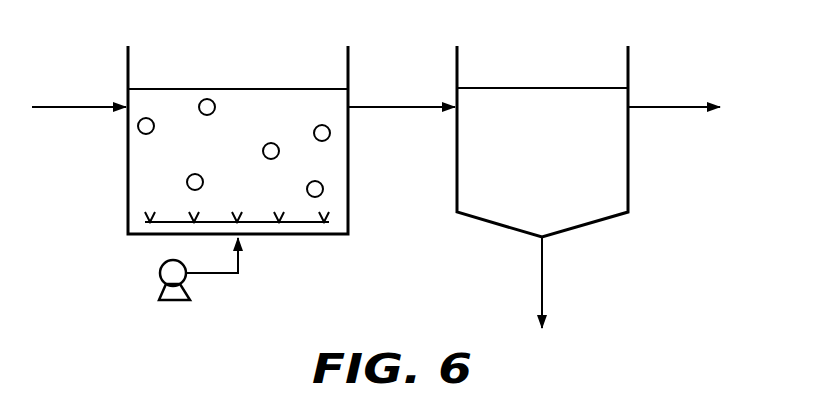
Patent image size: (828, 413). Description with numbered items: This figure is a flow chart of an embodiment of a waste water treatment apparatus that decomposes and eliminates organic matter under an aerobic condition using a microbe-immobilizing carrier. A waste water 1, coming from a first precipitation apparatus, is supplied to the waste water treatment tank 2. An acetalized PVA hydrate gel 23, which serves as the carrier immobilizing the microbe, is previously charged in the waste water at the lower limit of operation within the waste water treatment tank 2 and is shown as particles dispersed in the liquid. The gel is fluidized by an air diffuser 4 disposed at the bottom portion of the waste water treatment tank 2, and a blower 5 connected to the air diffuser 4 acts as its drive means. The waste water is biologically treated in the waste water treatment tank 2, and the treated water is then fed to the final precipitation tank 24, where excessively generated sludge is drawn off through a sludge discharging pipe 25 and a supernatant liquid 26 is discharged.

The waste water 1 is at (60, 106).
The waste water treatment tank 2 is at (266, 122).
The acetalized PVA hydrate gel 23 is at (331, 134).
The air diffuser 4 is at (294, 223).
The blower 5 is at (158, 270).
The final precipitation tank 24 is at (556, 110).
The sludge discharging pipe 25 is at (545, 300).
The supernatant liquid 26 is at (680, 105).